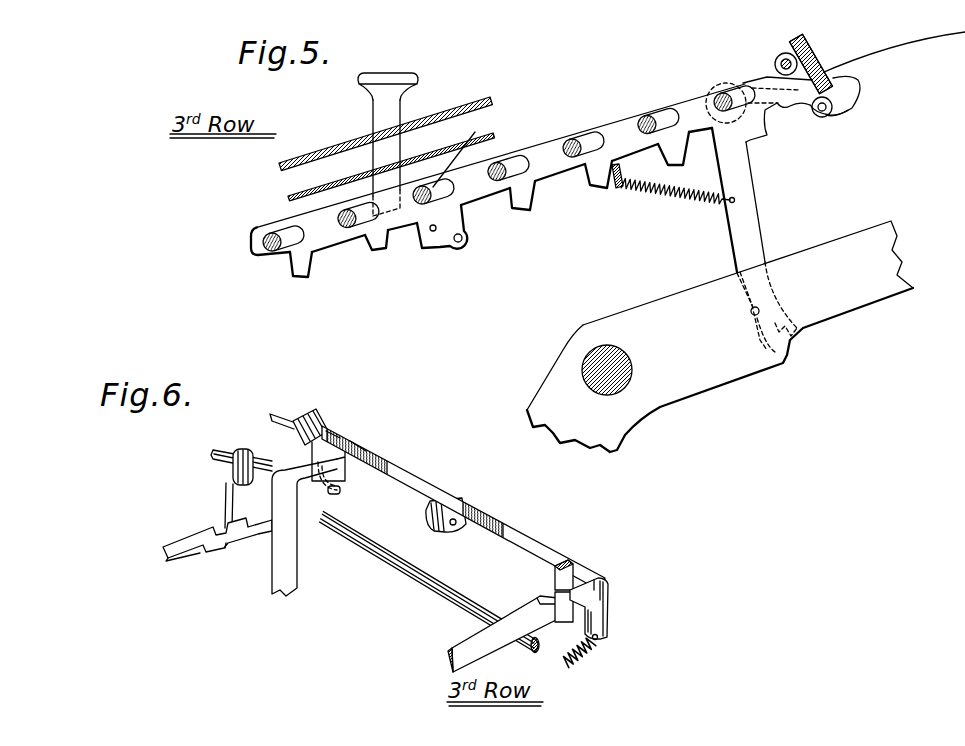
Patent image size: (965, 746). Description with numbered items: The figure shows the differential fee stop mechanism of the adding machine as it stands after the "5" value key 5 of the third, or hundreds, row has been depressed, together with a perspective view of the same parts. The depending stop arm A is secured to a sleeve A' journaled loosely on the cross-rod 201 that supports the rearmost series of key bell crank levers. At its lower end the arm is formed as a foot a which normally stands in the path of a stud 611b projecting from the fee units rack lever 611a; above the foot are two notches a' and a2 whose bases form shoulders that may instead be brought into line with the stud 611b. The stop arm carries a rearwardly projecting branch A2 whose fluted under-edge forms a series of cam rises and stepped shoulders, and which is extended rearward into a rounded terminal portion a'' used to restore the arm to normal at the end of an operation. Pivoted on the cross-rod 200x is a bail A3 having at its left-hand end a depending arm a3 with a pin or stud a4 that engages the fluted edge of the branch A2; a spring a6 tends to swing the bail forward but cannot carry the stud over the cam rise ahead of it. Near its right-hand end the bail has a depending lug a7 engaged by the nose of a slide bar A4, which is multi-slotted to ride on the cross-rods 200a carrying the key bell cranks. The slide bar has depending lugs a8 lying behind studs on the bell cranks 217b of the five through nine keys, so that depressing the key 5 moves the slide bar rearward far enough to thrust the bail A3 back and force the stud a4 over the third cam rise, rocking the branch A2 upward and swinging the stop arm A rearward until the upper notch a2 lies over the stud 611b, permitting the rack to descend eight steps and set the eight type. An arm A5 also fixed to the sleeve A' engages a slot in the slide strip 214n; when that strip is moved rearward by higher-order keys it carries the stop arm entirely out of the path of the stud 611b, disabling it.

In FIG. 5, the value key 5 is at (388, 72).
In FIG. 5, the cross-rods 200a is at (265, 250).
In FIG. 5, the cross-rod 201 is at (721, 98).
In FIG. 6, the cross-rod 201 is at (403, 573).
In FIG. 5, the cross-rod 200x is at (777, 61).
In FIG. 6, the cross-rod 200x is at (282, 417).
In FIG. 5, the bail A3 is at (810, 47).
In FIG. 6, the bail A3 is at (523, 533).
In FIG. 5, the rearwardly-projecting branch A2 is at (823, 73).
In FIG. 6, the rearwardly-projecting branch A2 is at (333, 430).
In FIG. 5, the rounded terminal portion a'' is at (882, 95).
In FIG. 5, the depending arm a3 is at (838, 111).
In FIG. 6, the depending arm a3 is at (358, 440).
In FIG. 5, the pin or stud a4 is at (822, 112).
In FIG. 6, the pin or stud a4 is at (335, 488).
In FIG. 5, the stop arm A is at (760, 240).
In FIG. 6, the stop arm A is at (308, 519).
In FIG. 5, the depending lugs a8 is at (302, 278).
In FIG. 5, the spring a6 is at (688, 200).
In FIG. 6, the spring a6 is at (585, 657).
In FIG. 5, the slide bar A4 is at (552, 178).
In FIG. 6, the slide bar A4 is at (457, 653).
In FIG. 5, the bell cranks 217b is at (433, 253).
In FIG. 5, the fee units rack lever 611a is at (720, 336).
In FIG. 5, the stud 611b is at (753, 317).
In FIG. 5, the notch a2 is at (750, 313).
In FIG. 5, the foot a is at (801, 352).
In FIG. 5, the notch a' is at (754, 363).
In FIG. 6, the sleeve A' is at (241, 433).
In FIG. 6, the arm A5 is at (237, 502).
In FIG. 6, the slide strip 214n is at (177, 540).
In FIG. 6, the depending lug a7 is at (583, 573).